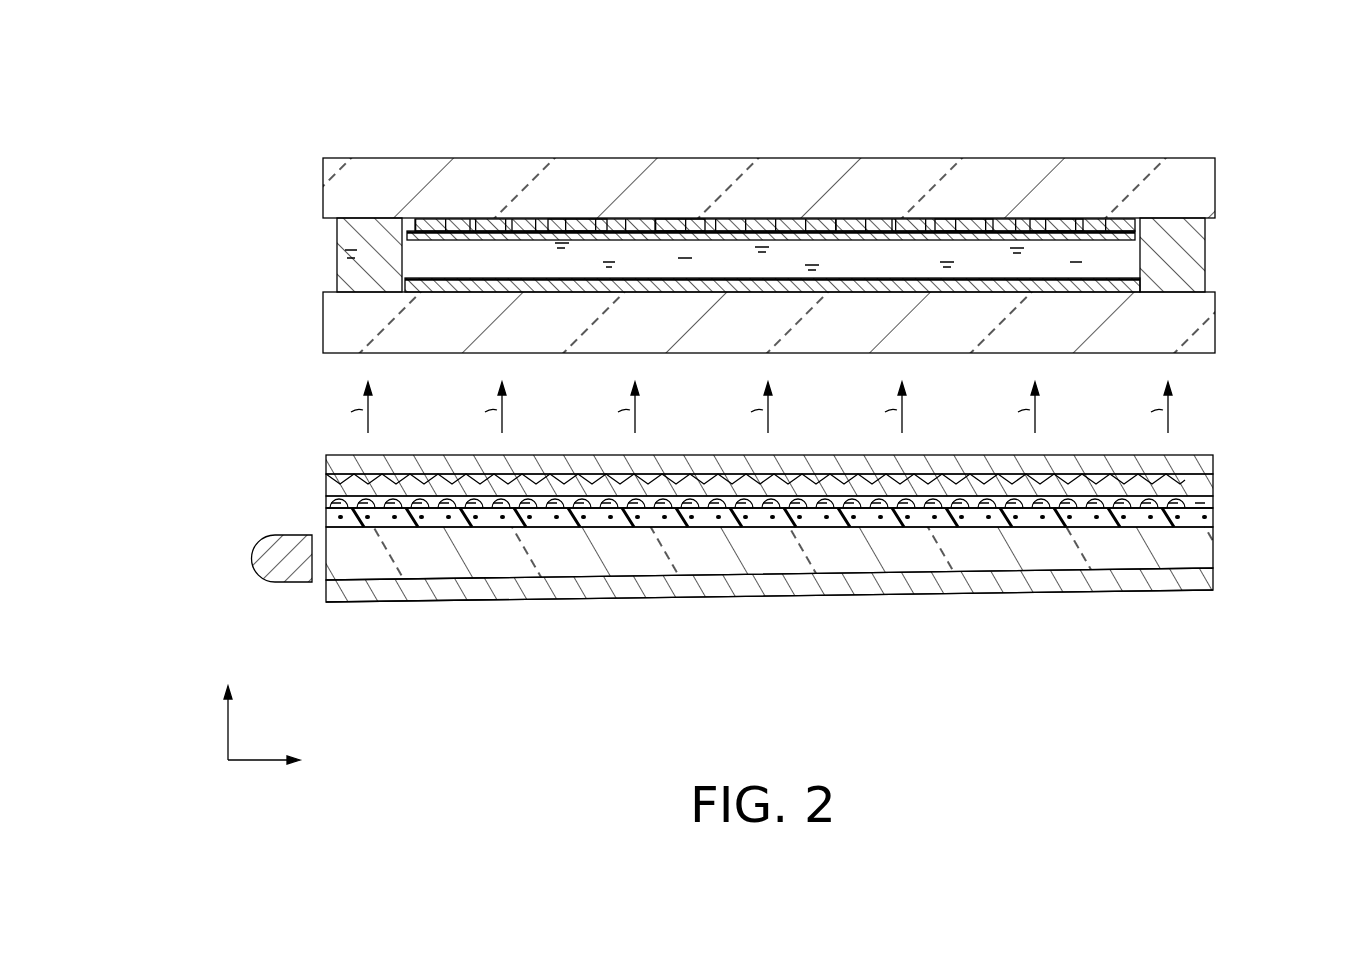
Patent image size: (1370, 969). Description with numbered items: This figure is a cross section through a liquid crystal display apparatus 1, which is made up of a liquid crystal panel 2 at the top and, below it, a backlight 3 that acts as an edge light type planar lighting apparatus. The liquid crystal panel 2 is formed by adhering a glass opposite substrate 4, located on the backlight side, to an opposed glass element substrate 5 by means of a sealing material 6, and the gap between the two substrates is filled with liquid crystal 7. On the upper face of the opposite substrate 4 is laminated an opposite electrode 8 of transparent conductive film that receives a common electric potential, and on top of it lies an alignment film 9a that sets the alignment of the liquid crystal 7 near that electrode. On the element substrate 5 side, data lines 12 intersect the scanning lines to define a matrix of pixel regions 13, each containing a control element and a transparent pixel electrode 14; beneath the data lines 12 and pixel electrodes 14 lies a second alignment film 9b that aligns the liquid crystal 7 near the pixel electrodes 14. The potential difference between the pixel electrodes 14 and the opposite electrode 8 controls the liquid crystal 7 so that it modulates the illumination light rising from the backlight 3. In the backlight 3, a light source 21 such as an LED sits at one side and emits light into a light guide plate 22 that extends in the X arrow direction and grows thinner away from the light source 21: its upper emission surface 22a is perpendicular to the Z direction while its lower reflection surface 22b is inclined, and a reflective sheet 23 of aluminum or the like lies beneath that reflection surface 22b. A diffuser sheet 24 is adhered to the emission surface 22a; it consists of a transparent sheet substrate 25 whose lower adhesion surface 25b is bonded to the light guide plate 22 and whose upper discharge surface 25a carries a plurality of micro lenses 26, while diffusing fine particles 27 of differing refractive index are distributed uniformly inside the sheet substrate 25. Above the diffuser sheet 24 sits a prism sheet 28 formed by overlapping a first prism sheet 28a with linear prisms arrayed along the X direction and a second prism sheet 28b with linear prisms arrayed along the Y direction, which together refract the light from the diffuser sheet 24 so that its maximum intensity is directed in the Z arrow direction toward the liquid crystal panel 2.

The liquid crystal display apparatus 1 is at (360, 93).
The liquid crystal panel 2 is at (959, 128).
The backlight 3 is at (225, 452).
The opposite substrate 4 is at (342, 354).
The element substrate 5 is at (342, 158).
The sealing material 6 is at (337, 250).
The liquid crystal 7 is at (670, 258).
The opposite electrode 8 is at (1122, 295).
The alignment film 9a is at (1090, 278).
The alignment film 9b is at (1008, 240).
The data lines 12 is at (607, 215).
The pixel regions 13 is at (509, 210).
The pixel electrode 14 is at (655, 218).
The light source 21 is at (252, 560).
The light guide plate 22 is at (326, 578).
The emission surface 22a is at (1213, 525).
The reflection surface 22b is at (1213, 580).
The reflective sheet 23 is at (1176, 597).
The diffuser sheet 24 is at (262, 470).
The sheet substrate 25 is at (326, 517).
The discharge surface 25a is at (1213, 500).
The adhesion surface 25b is at (1156, 527).
The micro lenses 26 is at (326, 495).
The diffusing fine particles 27 is at (444, 527).
The prism sheet 28 is at (1296, 440).
The first prism sheet 28a is at (1215, 490).
The second prism sheet 28b is at (1215, 466).